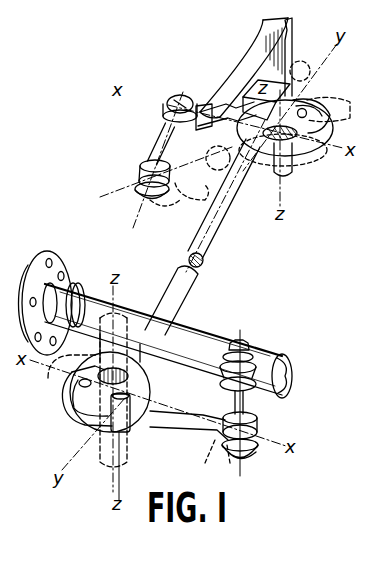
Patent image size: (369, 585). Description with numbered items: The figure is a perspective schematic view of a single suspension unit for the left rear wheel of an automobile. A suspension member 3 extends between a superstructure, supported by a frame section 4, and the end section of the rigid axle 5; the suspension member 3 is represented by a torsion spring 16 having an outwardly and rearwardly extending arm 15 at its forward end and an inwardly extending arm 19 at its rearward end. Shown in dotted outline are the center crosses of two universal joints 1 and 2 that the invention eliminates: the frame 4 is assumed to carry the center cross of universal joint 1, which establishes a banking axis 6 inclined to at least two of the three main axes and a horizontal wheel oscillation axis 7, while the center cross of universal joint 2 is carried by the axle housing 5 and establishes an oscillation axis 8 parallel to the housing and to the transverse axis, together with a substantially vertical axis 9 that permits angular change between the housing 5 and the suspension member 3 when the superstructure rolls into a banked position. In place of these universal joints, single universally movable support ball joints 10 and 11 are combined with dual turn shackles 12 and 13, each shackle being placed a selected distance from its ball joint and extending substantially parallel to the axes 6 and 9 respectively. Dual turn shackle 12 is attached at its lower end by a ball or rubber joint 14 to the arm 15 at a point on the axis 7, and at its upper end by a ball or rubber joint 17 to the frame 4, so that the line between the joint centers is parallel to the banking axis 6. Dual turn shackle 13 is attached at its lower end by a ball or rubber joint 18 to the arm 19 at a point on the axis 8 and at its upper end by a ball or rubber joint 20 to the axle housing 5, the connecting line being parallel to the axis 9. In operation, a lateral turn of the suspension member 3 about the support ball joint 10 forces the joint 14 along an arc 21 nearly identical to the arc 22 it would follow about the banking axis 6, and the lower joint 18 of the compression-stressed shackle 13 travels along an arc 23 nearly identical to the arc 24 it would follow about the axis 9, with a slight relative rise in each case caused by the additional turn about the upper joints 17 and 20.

The universal joint 1 is at (305, 87).
The universal joint 2 is at (102, 457).
The suspension member 3 is at (278, 254).
The frame section 4 is at (247, 48).
The rigid axle 5 is at (205, 334).
The banking axis 6 is at (302, 61).
The wheel oscillation axis 7 is at (120, 190).
The oscillation axis 8 is at (260, 440).
The vertically extending axis 9 is at (119, 466).
The support ball joint 10 is at (315, 120).
The support ball joint 11 is at (150, 373).
The dual turn shackle 12 is at (164, 142).
The dual turn shackle 13 is at (235, 400).
The ball or rubber joint 14 is at (140, 166).
The arm 15 is at (201, 158).
The torsion spring 16 is at (190, 289).
The ball or rubber joint 17 is at (178, 96).
The ball or rubber joint 18 is at (256, 453).
The arm 19 is at (172, 428).
The ball or rubber joint 20 is at (255, 350).
The arc 21 is at (165, 212).
The arc 22 is at (202, 200).
The arc 23 is at (231, 452).
The arc 24 is at (212, 447).